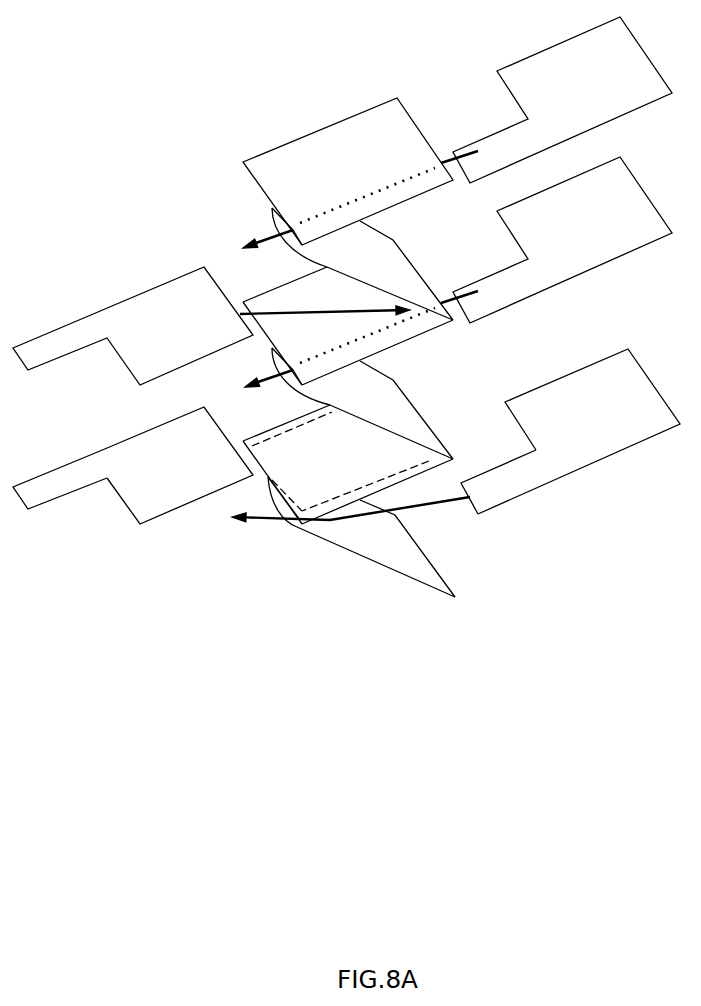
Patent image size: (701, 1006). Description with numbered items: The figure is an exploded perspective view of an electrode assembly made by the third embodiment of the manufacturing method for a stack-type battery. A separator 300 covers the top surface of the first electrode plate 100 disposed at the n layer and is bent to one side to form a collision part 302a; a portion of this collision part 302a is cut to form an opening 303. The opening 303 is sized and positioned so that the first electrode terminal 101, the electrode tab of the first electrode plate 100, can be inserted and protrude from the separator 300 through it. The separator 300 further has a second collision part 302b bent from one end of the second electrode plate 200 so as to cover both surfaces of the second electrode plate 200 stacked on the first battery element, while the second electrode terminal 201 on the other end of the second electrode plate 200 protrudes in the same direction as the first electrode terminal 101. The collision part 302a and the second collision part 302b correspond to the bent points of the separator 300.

The first electrode plate 100 is at (608, 437).
The first electrode terminal 101 is at (518, 477).
The second electrode plate 200 is at (147, 507).
The second electrode terminal 201 is at (37, 493).
The separator 300 is at (315, 147).
The collision part 302a is at (265, 478).
The second collision part 302b is at (405, 412).
The opening 303 is at (290, 513).